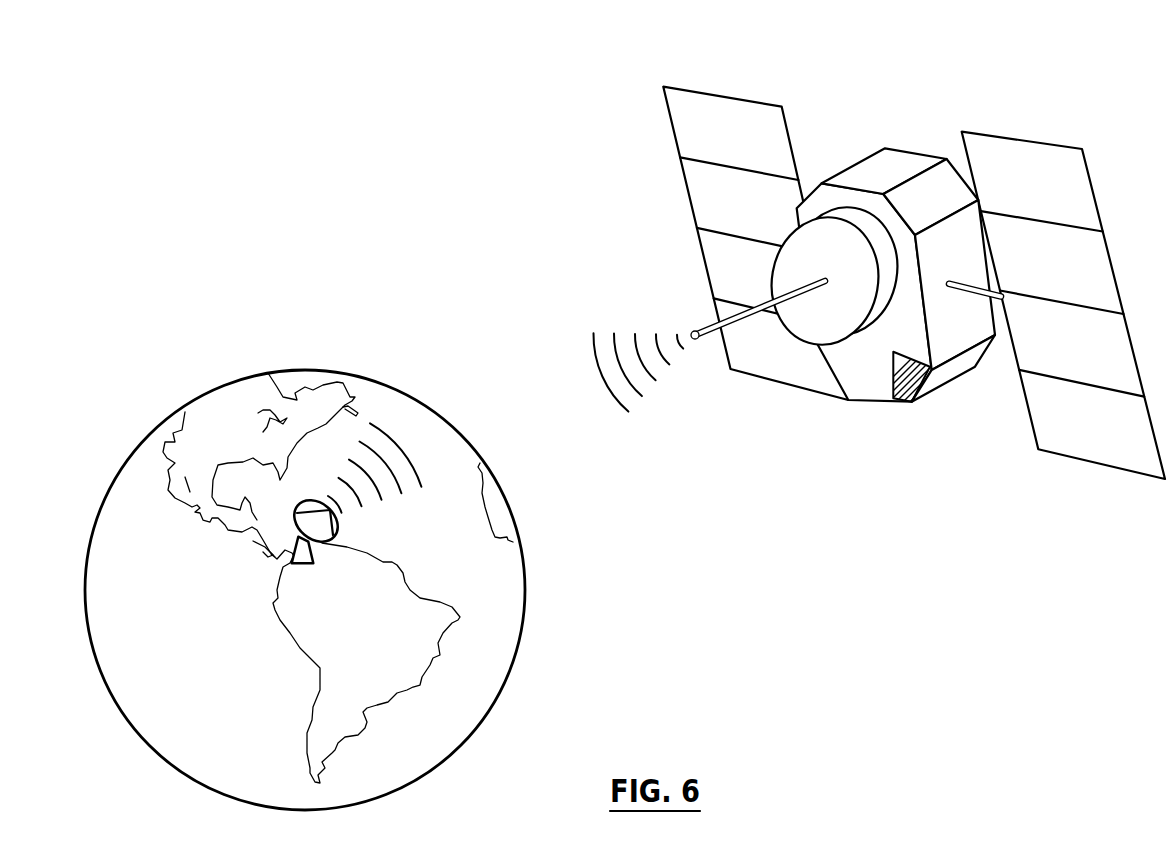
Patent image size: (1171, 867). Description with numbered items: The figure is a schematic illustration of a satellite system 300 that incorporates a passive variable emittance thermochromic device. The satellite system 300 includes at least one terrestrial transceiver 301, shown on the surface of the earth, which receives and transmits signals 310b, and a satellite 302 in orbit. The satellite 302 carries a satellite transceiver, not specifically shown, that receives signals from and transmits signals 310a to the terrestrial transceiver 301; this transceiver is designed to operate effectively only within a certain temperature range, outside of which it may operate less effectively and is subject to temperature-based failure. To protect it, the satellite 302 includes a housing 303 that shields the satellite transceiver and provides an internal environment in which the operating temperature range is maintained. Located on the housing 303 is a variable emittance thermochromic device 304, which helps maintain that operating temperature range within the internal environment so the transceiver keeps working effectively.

The satellite system 300 is at (280, 312).
The terrestrial transceiver 301 is at (297, 538).
The satellite 302 is at (905, 150).
The housing 303 is at (980, 347).
The variable emittance thermochromic device 304 is at (907, 398).
The signals 310a is at (622, 407).
The signals 310b is at (398, 458).